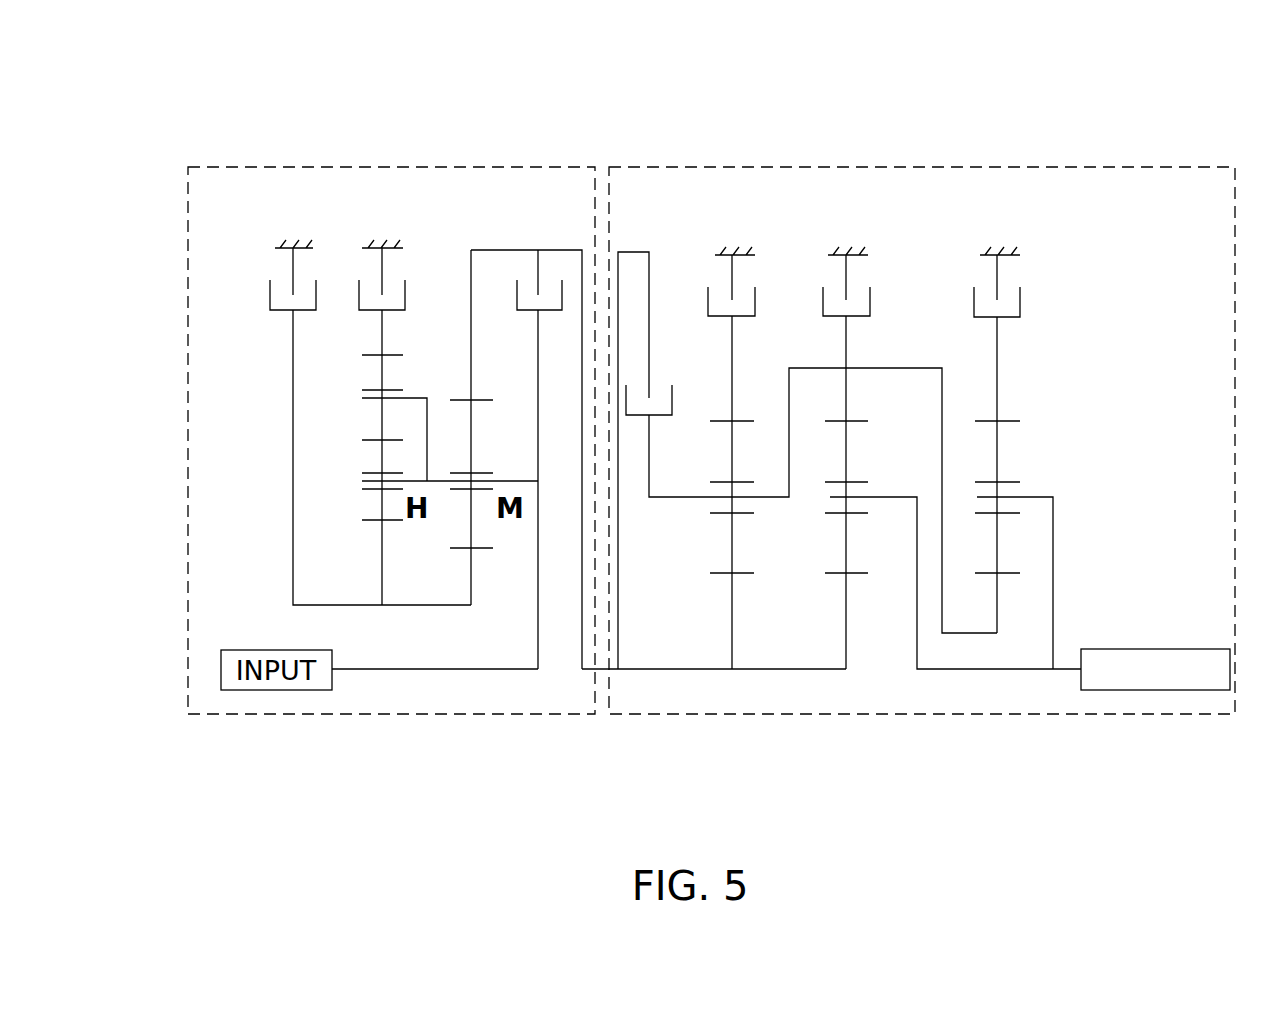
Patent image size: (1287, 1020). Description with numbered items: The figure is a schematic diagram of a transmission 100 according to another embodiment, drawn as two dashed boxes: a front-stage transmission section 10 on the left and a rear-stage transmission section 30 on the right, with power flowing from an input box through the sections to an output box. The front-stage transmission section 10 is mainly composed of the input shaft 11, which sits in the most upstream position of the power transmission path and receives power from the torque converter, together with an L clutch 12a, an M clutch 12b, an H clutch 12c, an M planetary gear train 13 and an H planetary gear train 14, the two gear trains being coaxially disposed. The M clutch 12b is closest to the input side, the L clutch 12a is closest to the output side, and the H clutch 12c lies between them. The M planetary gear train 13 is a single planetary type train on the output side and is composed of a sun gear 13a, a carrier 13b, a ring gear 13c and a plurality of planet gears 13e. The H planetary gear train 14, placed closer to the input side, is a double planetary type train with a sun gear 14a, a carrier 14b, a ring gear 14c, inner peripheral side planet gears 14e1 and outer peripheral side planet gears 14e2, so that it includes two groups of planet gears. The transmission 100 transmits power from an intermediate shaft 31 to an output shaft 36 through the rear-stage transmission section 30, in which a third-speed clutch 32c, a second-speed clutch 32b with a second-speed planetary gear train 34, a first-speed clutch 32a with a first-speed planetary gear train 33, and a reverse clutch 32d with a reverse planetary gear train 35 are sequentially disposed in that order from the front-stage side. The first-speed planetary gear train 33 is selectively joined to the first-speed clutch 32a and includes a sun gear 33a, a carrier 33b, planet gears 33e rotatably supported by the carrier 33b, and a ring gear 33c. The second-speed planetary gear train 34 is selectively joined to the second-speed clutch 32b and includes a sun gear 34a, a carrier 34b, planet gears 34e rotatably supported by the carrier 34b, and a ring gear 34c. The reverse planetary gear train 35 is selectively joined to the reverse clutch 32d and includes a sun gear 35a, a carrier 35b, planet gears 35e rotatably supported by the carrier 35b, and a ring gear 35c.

The transmission 100 is at (160, 115).
The front-stage transmission section 10 is at (250, 160).
The rear-stage transmission section 30 is at (675, 155).
The input shaft 11 is at (400, 680).
The L clutch 12a is at (525, 272).
The M clutch 12b is at (290, 290).
The H clutch 12c is at (376, 290).
The M planetary gear train 13 is at (468, 330).
The sun gear 13a is at (470, 580).
The carrier 13b is at (495, 480).
The ring gear 13c is at (470, 400).
The planet gears 13e is at (470, 455).
The H planetary gear train 14 is at (395, 337).
The sun gear 14a is at (380, 578).
The carrier 14b is at (362, 488).
The ring gear 14c is at (375, 356).
The inner peripheral side planet gears 14e1 is at (385, 456).
The outer peripheral side planet gears 14e2 is at (385, 406).
The intermediate shaft 31 is at (660, 672).
The first-speed clutch 32a is at (835, 287).
The second-speed clutch 32b is at (722, 287).
The third-speed clutch 32c is at (662, 372).
The reverse clutch 32d is at (985, 290).
The first-speed planetary gear train 33 is at (852, 675).
The sun gear 33a is at (846, 645).
The carrier 33b is at (880, 497).
The ring gear 33c is at (850, 420).
The planet gears 33e is at (840, 473).
The second-speed planetary gear train 34 is at (735, 672).
The sun gear 34a is at (732, 645).
The carrier 34b is at (716, 497).
The ring gear 34c is at (738, 420).
The planet gears 34e is at (735, 473).
The reverse planetary gear train 35 is at (1000, 638).
The sun gear 35a is at (995, 590).
The carrier 35b is at (1025, 497).
The ring gear 35c is at (1005, 420).
The planet gears 35e is at (995, 473).
The output shaft 36 is at (1065, 672).